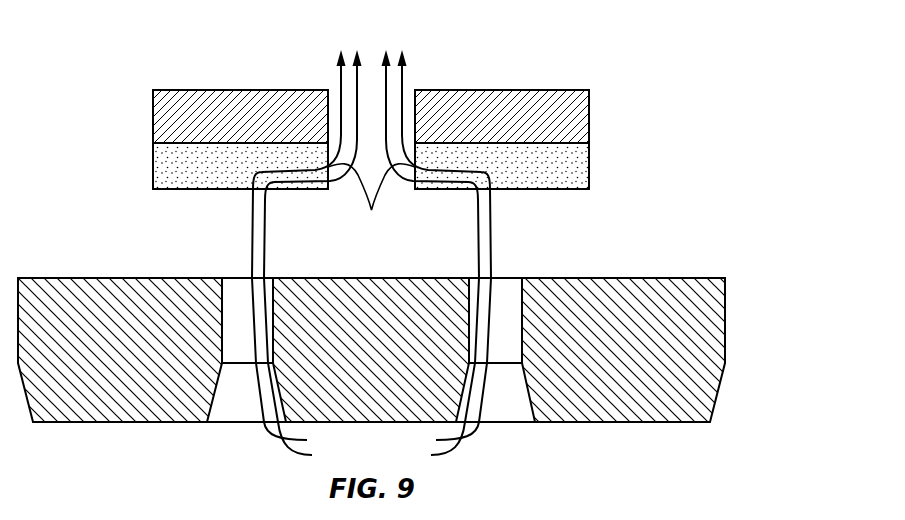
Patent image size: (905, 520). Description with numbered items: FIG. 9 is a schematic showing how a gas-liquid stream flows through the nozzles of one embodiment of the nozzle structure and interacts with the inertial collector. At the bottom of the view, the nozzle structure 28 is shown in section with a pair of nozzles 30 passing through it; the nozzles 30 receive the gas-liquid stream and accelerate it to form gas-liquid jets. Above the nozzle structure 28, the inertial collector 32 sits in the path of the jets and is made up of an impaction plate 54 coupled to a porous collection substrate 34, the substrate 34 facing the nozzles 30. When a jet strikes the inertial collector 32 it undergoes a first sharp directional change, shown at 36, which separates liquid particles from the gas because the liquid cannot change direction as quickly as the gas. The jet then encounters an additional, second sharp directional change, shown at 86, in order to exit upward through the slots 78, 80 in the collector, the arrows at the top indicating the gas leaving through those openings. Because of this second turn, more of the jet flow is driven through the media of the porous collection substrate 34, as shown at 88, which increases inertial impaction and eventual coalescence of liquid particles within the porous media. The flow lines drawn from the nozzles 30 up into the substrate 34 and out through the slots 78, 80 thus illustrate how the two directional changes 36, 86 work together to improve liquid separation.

The nozzle structure 28 is at (398, 375).
The nozzles 30 is at (216, 400).
The inertial collector 32 is at (408, 133).
The porous collection substrate 34 is at (573, 163).
The sharp directional change 36 is at (256, 173).
The impaction plate 54 is at (552, 113).
The slots 78 is at (375, 76).
The spokes 80 is at (372, 118).
The second sharp directional change 86 is at (371, 203).
The flow through porous collection substrate media 88 is at (286, 190).